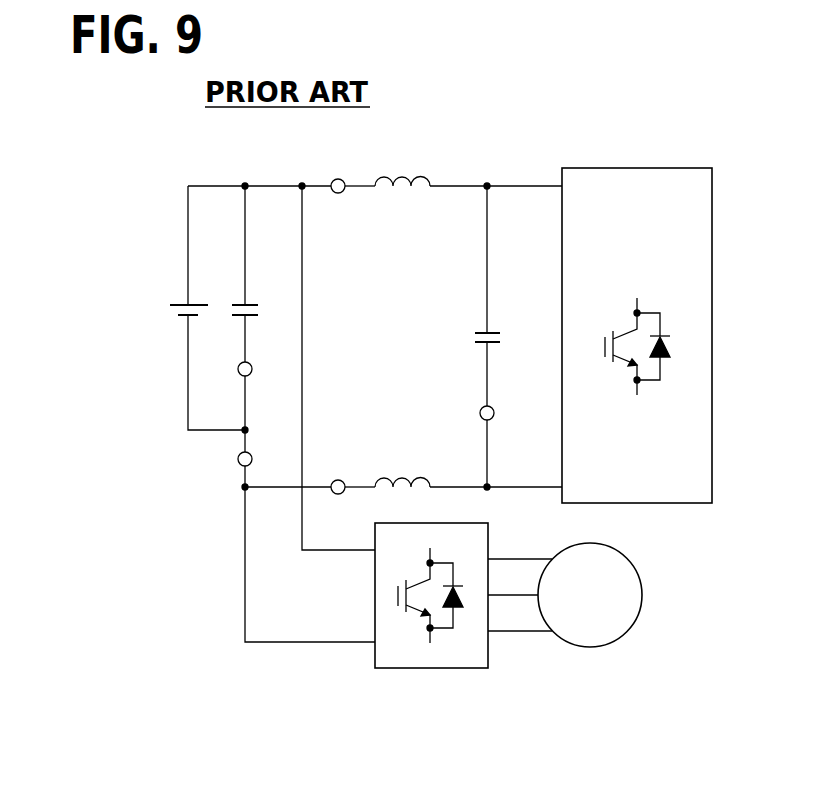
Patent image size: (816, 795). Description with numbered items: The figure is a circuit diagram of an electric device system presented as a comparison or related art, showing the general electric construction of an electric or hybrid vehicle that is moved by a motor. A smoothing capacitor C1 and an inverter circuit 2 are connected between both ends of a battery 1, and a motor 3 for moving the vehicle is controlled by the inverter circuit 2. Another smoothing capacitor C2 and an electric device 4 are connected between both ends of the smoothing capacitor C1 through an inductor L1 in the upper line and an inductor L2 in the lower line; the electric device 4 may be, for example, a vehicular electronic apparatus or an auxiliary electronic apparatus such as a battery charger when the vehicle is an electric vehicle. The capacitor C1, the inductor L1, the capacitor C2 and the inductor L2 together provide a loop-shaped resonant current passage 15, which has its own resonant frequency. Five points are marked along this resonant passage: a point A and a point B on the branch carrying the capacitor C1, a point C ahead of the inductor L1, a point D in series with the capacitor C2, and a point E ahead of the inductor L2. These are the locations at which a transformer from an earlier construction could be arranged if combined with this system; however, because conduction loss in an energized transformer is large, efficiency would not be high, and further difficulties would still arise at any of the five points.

The resonant current passage 15 is at (150, 162).
The battery 1 is at (170, 307).
The inverter circuit 2 is at (430, 668).
The motor 3 is at (643, 595).
The electric device 4 is at (637, 168).
The smoothing capacitor C1 is at (258, 310).
The smoothing capacitor C2 is at (499, 296).
The inductor L1 is at (402, 164).
The inductor L2 is at (402, 463).
The point A is at (252, 366).
The point B is at (238, 459).
The point C is at (342, 193).
The point D is at (494, 411).
The point E is at (338, 480).